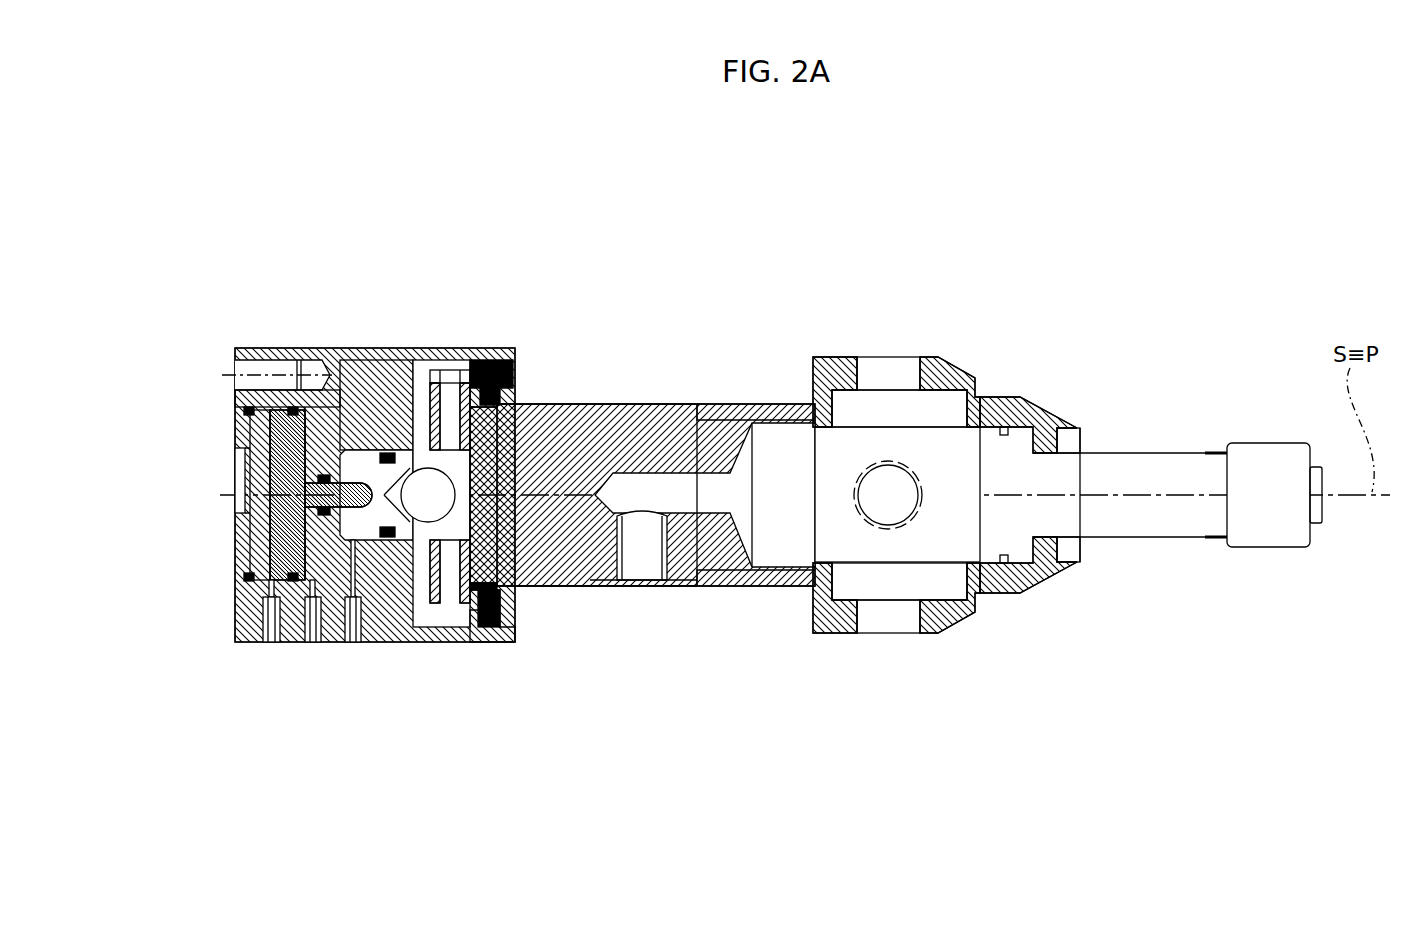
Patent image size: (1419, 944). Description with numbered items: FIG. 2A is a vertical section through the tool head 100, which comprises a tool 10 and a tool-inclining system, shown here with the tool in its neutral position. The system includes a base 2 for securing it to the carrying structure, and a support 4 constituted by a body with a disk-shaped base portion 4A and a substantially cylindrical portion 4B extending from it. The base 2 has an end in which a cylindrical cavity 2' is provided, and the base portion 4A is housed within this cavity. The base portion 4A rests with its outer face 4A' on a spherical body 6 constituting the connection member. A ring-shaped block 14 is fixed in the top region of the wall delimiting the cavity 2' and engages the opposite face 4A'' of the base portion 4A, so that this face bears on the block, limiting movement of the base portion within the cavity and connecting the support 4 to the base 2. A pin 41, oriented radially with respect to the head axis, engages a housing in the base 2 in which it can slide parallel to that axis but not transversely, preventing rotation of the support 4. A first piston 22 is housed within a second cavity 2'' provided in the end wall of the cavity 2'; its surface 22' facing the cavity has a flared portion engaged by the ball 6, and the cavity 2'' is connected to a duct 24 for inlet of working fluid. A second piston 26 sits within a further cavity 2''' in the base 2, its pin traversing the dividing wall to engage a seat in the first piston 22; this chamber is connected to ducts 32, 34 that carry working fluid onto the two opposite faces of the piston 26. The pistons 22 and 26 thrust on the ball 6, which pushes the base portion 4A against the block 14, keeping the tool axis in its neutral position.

The base 2 is at (368, 450).
The cylindrical cavity 2' is at (393, 344).
The second cavity 2'' is at (287, 341).
The further cavity 2''' is at (236, 495).
The support 4 is at (640, 398).
The disk-shaped base portion 4A is at (416, 462).
The outer face 4A' is at (401, 423).
The face opposite the outer face 4A'' is at (533, 627).
The cylindrical portion 4B is at (560, 422).
The spherical body 6 is at (445, 505).
The tool 10 is at (1152, 450).
The ring-shaped block 14 is at (502, 635).
The first piston 22 is at (371, 559).
The surface of first piston 22' is at (428, 573).
The duct 24 is at (356, 644).
The second piston 26 is at (290, 538).
The duct 32 is at (268, 644).
The duct 34 is at (312, 644).
The pin 41 is at (462, 375).
The tool head 100 is at (996, 300).